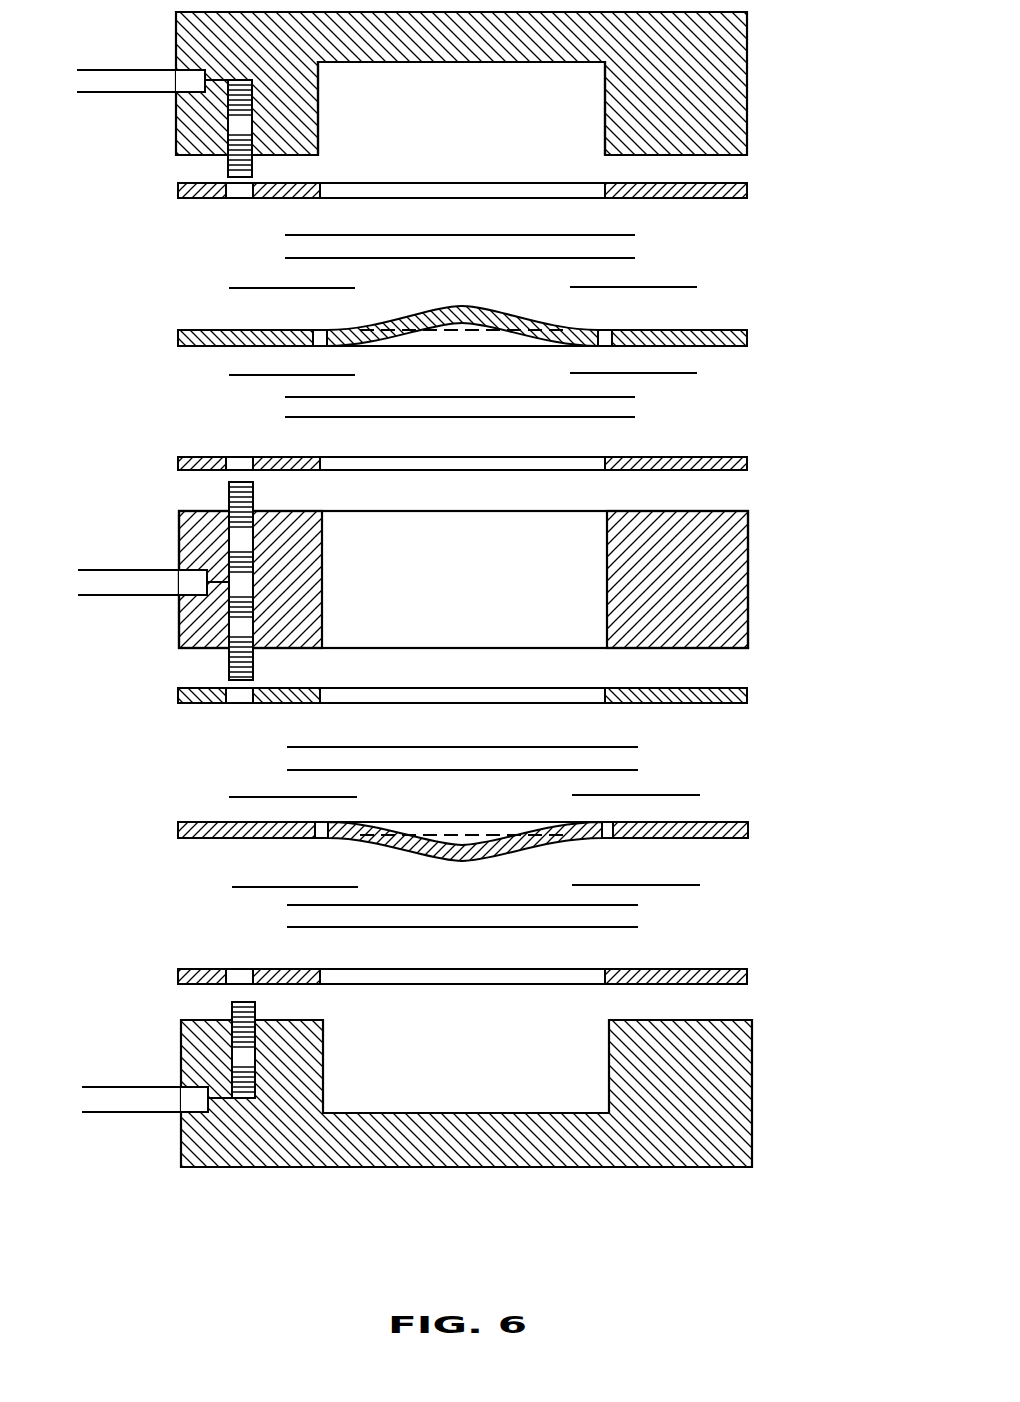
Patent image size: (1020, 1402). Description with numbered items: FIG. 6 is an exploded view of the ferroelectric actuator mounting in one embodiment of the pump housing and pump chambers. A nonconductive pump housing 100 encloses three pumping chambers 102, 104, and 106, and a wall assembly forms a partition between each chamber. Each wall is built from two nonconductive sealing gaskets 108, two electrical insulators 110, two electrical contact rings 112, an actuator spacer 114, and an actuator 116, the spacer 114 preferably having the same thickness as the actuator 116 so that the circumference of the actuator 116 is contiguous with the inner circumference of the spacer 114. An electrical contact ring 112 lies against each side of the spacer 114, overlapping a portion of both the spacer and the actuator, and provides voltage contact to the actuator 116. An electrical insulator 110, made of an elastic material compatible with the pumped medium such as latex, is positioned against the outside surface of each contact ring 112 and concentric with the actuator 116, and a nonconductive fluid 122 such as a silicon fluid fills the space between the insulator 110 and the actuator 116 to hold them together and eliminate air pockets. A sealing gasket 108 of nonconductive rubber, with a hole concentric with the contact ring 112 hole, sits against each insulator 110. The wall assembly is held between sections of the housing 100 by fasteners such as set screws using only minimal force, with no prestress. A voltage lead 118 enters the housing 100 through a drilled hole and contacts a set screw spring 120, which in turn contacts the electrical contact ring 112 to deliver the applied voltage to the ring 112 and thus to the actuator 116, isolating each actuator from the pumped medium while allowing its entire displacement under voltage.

The pump housing 100 is at (728, 49).
The pumping chamber 102 is at (490, 140).
The pumping chamber 104 is at (360, 585).
The pumping chamber 106 is at (343, 1087).
The sealing gasket 108 is at (743, 182).
The electrical insulator 110 is at (508, 233).
The electrical contact ring 112 is at (667, 285).
The actuator spacer 114 is at (723, 327).
The actuator 116 is at (462, 308).
The voltage lead 118 is at (157, 75).
The set screw spring 120 is at (227, 102).
The nonconductive fluid 122 is at (620, 256).